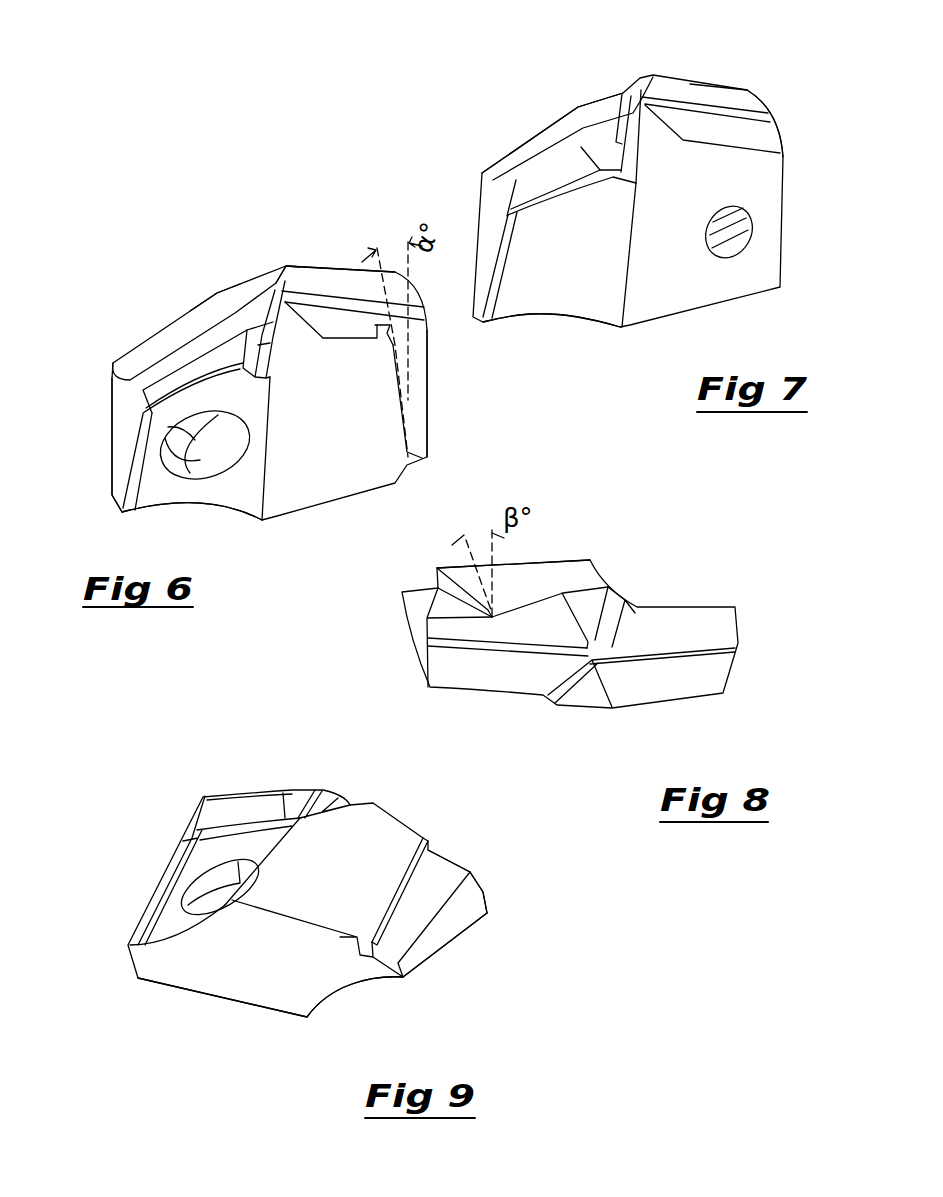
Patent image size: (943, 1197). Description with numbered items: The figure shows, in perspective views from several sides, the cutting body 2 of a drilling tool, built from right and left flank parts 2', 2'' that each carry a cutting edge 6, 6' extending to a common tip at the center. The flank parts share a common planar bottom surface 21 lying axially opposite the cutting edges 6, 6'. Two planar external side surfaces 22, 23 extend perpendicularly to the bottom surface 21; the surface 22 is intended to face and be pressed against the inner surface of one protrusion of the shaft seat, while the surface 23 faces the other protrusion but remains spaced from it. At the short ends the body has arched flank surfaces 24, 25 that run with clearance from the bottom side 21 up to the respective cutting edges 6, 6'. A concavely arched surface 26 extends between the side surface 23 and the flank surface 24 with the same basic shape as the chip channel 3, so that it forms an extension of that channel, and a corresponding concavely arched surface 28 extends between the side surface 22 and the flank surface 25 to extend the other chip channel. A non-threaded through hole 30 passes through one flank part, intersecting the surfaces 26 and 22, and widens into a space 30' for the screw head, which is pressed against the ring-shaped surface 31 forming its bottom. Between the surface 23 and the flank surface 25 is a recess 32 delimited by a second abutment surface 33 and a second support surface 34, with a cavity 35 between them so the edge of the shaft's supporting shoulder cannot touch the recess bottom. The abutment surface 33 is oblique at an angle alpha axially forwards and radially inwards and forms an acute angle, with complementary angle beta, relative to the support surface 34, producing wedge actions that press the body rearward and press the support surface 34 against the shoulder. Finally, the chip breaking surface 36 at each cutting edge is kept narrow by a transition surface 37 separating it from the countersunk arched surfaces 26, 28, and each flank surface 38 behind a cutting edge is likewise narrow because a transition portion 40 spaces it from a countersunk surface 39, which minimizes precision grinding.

In FIG. 6, the cutting body 2 is at (269, 343).
In FIG. 7, the cutting body 2 is at (613, 201).
In FIG. 8, the cutting body 2 is at (570, 602).
In FIG. 9, the cutting body 2 is at (307, 863).
In FIG. 6, the right flank part 2' is at (340, 219).
In FIG. 7, the right flank part 2' is at (552, 102).
In FIG. 9, the right flank part 2' is at (535, 884).
In FIG. 6, the left flank part 2'' is at (170, 323).
In FIG. 7, the left flank part 2'' is at (771, 79).
In FIG. 9, the left flank part 2'' is at (215, 827).
In FIG. 7, the chip channel 3 is at (573, 187).
In FIG. 6, the cutting edge 6 is at (172, 327).
In FIG. 7, the cutting edge 6 is at (718, 60).
In FIG. 6, the cutting edge 6' is at (317, 243).
In FIG. 7, the cutting edge 6' is at (573, 122).
In FIG. 9, the bottom surface 21 is at (225, 985).
In FIG. 7, the planar external side surface 22 is at (657, 255).
In FIG. 6, the planar external side surface 23 is at (314, 448).
In FIG. 8, the planar external side surface 23 is at (563, 568).
In FIG. 6, the arched flank surface 24 is at (120, 447).
In FIG. 7, the arched flank surface 25 is at (487, 205).
In FIG. 8, the arched flank surface 25 is at (420, 643).
In FIG. 9, the arched flank surface 25 is at (442, 937).
In FIG. 6, the concavely arched surface 26 is at (165, 497).
In FIG. 7, the concavely arched surface 28 is at (555, 303).
In FIG. 7, the through hole 30 is at (717, 219).
In FIG. 6, the space 30' is at (238, 445).
In FIG. 6, the ring-shaped surface 31 is at (195, 443).
In FIG. 6, the recess 32 is at (432, 388).
In FIG. 8, the recess 32 is at (428, 578).
In FIG. 9, the recess 32 is at (437, 843).
In FIG. 6, the second abutment surface 33 is at (403, 417).
In FIG. 8, the second abutment surface 33 is at (477, 593).
In FIG. 9, the second abutment surface 33 is at (398, 892).
In FIG. 6, the second support surface 34 is at (423, 337).
In FIG. 8, the second support surface 34 is at (423, 600).
In FIG. 9, the second support surface 34 is at (400, 943).
In FIG. 8, the cavity 35 is at (493, 617).
In FIG. 9, the cavity 35 is at (417, 880).
In FIG. 6, the chip breaking surface 36 is at (213, 357).
In FIG. 7, the chip breaking surface 36 is at (545, 185).
In FIG. 6, the transition surface 37 is at (218, 380).
In FIG. 6, the flank surface 38 is at (188, 347).
In FIG. 6, the countersunk surface 39 is at (188, 317).
In FIG. 7, the countersunk surface 39 is at (743, 102).
In FIG. 6, the transition portion 40 is at (117, 388).
In FIG. 7, the transition portion 40 is at (768, 116).